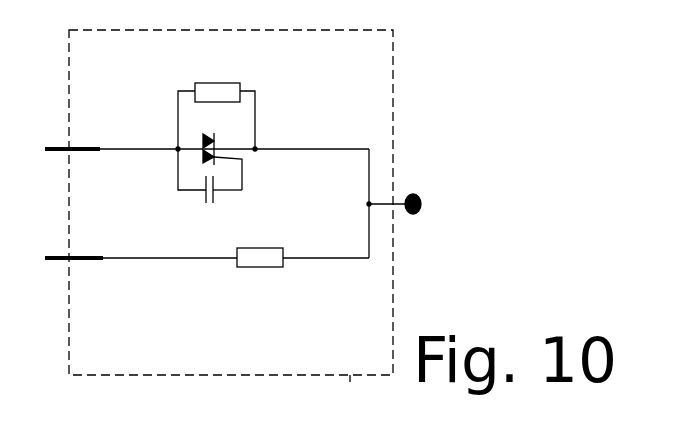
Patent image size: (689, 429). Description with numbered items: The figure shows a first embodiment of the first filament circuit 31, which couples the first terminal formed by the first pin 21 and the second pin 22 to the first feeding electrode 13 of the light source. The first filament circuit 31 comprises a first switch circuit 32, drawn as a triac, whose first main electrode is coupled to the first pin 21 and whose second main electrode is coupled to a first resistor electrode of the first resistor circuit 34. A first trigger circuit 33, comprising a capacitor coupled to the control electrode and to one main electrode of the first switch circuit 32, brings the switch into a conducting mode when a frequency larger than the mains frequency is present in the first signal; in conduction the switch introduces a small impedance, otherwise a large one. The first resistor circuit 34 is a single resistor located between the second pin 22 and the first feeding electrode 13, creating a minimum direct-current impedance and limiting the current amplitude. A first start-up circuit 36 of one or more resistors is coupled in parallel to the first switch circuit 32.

The first feeding electrode 13 is at (433, 208).
The first pin 21 is at (51, 154).
The second pin 22 is at (52, 259).
The first filament circuit 31 is at (231, 224).
The first switch circuit 32 is at (228, 153).
The first trigger circuit 33 is at (210, 195).
The first resistor circuit 34 is at (260, 278).
The first start-up circuit 36 is at (216, 99).